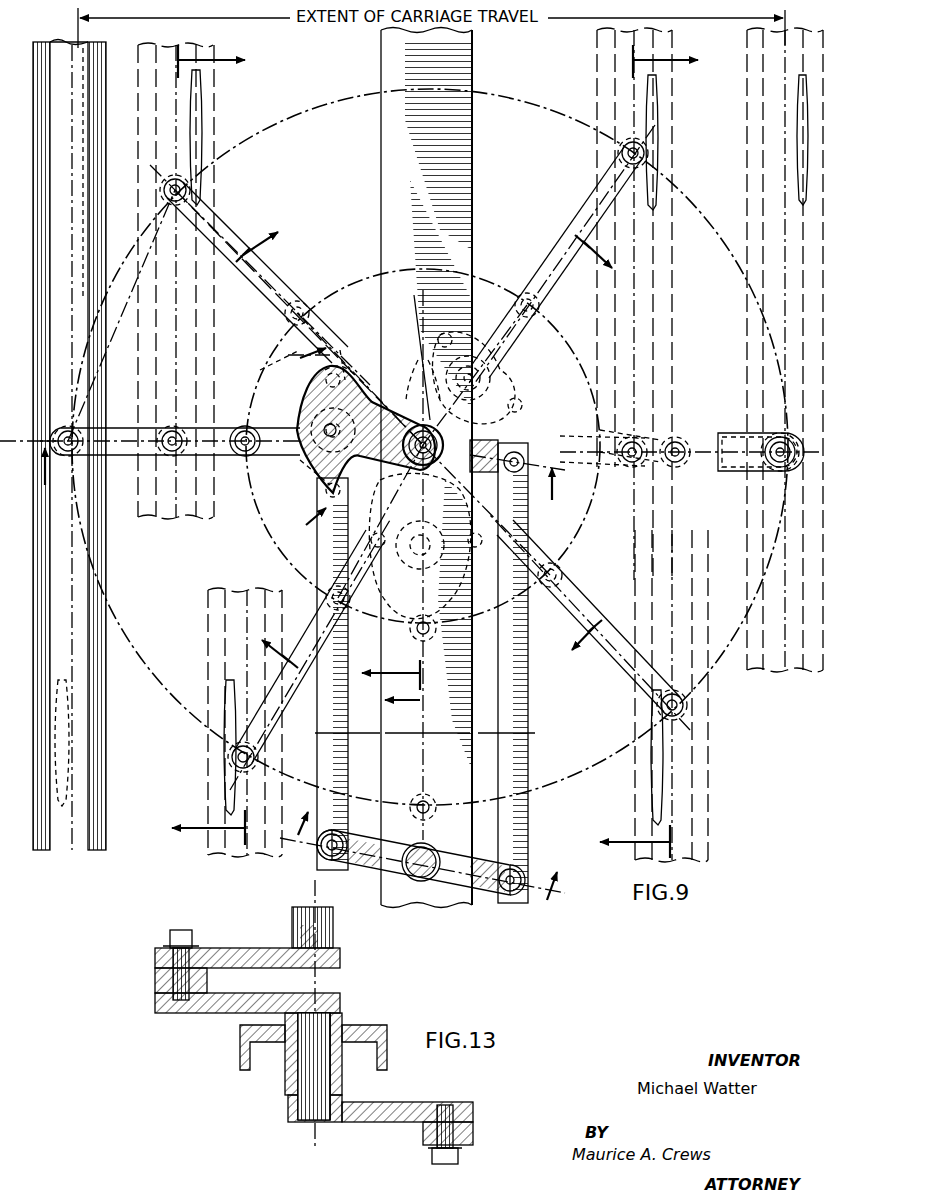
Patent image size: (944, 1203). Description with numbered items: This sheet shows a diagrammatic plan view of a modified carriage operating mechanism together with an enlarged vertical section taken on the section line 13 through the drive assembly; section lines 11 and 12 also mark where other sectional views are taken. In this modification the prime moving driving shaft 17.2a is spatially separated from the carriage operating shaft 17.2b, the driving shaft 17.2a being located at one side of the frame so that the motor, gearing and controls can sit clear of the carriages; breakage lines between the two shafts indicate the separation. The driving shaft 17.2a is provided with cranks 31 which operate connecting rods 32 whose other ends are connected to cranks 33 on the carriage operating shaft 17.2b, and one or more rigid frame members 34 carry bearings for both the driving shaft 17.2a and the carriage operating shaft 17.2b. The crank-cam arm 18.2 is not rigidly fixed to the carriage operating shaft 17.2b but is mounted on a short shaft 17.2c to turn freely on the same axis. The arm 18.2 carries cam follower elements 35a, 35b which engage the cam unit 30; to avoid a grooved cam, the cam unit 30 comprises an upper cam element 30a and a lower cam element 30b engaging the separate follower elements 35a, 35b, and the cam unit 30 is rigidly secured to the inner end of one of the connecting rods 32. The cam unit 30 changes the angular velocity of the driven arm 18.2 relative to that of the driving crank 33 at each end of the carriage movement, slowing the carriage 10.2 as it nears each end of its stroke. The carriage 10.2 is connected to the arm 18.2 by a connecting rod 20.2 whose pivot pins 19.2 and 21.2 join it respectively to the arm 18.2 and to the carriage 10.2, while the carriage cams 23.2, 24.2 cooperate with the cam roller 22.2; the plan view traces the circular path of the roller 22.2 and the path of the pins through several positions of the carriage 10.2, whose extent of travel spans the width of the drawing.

In FIG. 9, the carriage 10.2 is at (178, 115).
In FIG. 9, the section line 11- 11 is at (282, 486).
In FIG. 9, the section line 12- 12 is at (306, 436).
In FIG. 9, the section line 13— 13 is at (422, 865).
In FIG. 9, the driving shaft 17.2a is at (416, 877).
In FIG. 13, the driving shaft 17.2a is at (333, 940).
In FIG. 9, the carriage operating shaft 17.2b is at (380, 306).
In FIG. 9, the short shaft 17.2c is at (432, 379).
In FIG. 9, the crank-cam arm 18.2 is at (230, 222).
In FIG. 9, the pivot pin 19.2 is at (297, 300).
In FIG. 9, the connecting rod 20.2 is at (280, 325).
In FIG. 9, the pivot pin 21.2 is at (177, 432).
In FIG. 9, the cam roller 22.2 is at (620, 154).
In FIG. 9, the carriage cam 23.2 is at (66, 748).
In FIG. 9, the carriage cam 24.2 is at (80, 66).
In FIG. 9, the cam unit 30 is at (505, 380).
In FIG. 9, the upper cam element 30a is at (262, 365).
In FIG. 9, the lower cam element 30b is at (365, 356).
In FIG. 9, the crank 31 is at (363, 870).
In FIG. 13, the crank 31 is at (195, 1013).
In FIG. 9, the connecting rod 32 is at (330, 757).
In FIG. 13, the connecting rod 32 is at (157, 982).
In FIG. 9, the crank 33 is at (500, 420).
In FIG. 9, the rigid frame member 34 is at (466, 174).
In FIG. 13, the rigid frame member 34 is at (240, 1062).
In FIG. 9, the cam follower element 35a is at (352, 360).
In FIG. 9, the cam follower element 35b is at (315, 478).